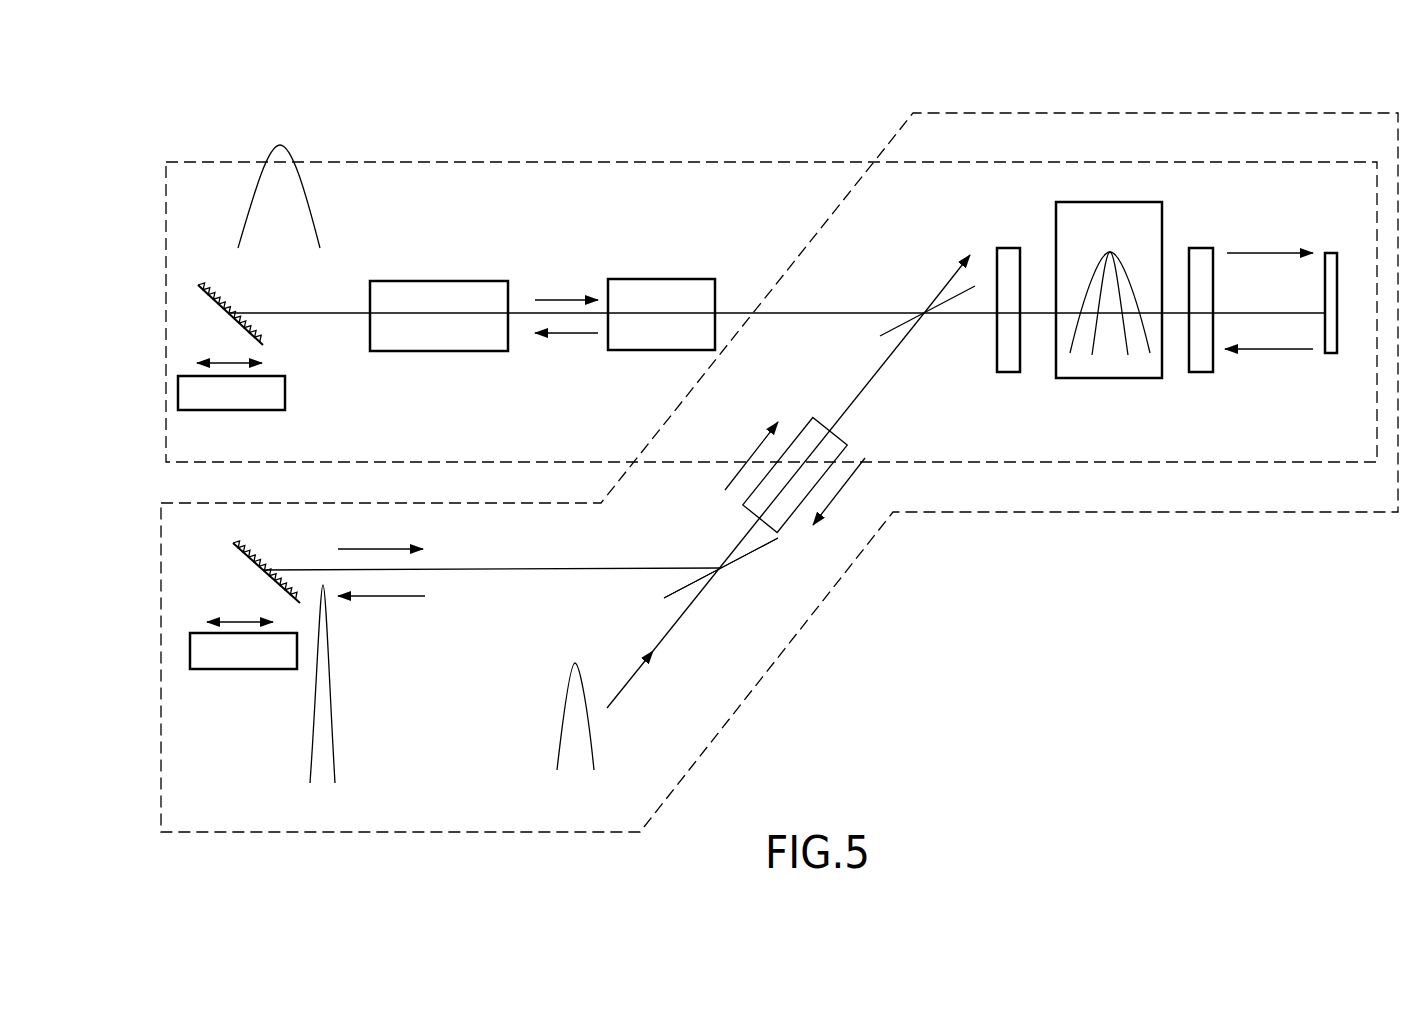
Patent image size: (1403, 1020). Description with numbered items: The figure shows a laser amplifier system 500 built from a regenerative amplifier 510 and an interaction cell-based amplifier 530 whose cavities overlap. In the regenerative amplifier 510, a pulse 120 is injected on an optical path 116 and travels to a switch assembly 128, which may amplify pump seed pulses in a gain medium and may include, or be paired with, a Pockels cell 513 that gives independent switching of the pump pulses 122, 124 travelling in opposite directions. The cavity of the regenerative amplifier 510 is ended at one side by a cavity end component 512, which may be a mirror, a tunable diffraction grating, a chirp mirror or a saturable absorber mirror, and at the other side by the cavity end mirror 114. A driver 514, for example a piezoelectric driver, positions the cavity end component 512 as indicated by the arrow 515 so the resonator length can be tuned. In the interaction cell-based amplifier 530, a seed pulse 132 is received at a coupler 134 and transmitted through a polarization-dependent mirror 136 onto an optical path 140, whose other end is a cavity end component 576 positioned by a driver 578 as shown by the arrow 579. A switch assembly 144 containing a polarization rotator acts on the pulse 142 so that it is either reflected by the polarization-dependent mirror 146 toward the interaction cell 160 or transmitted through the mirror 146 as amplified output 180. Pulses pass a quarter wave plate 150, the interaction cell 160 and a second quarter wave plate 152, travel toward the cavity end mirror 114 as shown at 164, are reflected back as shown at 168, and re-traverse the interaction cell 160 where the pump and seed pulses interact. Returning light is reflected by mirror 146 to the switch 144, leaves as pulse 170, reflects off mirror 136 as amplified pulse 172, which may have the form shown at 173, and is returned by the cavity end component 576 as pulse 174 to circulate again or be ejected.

The laser amplifier system 500 is at (230, 112).
The regenerative amplifier 510 is at (164, 334).
The cavity end component 512 is at (215, 290).
The driver 514 is at (285, 397).
The arrow 515 is at (215, 363).
The optical path 116 is at (258, 318).
The pulse 120 is at (313, 220).
The switch assembly 128 is at (388, 351).
The pump pulse 122 is at (560, 297).
The pump pulse 124 is at (573, 335).
The Pockels cell 513 is at (662, 279).
The polarization-dependent mirror 146 is at (882, 326).
The amplified output 180 is at (950, 282).
The pulse 142 is at (757, 440).
The switch assembly 144 is at (848, 448).
The pulse 170 is at (843, 487).
The quarter wave plate 150 is at (1022, 357).
The interaction cell 160 is at (1115, 378).
The quarter wave plate 152 is at (1213, 363).
The Raman pulse 164 is at (1250, 250).
The Raman pulse 168 is at (1275, 350).
The cavity end mirror 114 is at (1338, 280).
The polarization-dependent mirror 136 is at (758, 547).
The optical path 140 is at (738, 543).
The coupler 134 is at (675, 625).
The seed pulse 132 is at (563, 705).
The interaction cell-based amplifier 530 is at (158, 596).
The cavity end component 576 is at (248, 545).
The driver 578 is at (237, 669).
The arrow 579 is at (232, 622).
The pulse 174 is at (380, 546).
The amplified pulse 172 is at (375, 598).
The amplified pulse form 173 is at (333, 700).